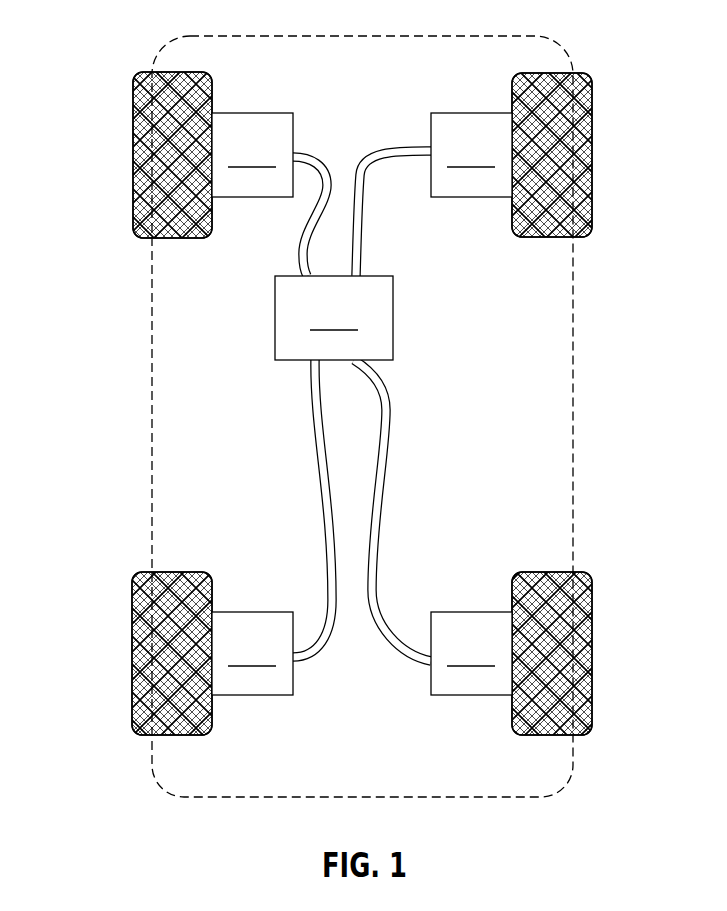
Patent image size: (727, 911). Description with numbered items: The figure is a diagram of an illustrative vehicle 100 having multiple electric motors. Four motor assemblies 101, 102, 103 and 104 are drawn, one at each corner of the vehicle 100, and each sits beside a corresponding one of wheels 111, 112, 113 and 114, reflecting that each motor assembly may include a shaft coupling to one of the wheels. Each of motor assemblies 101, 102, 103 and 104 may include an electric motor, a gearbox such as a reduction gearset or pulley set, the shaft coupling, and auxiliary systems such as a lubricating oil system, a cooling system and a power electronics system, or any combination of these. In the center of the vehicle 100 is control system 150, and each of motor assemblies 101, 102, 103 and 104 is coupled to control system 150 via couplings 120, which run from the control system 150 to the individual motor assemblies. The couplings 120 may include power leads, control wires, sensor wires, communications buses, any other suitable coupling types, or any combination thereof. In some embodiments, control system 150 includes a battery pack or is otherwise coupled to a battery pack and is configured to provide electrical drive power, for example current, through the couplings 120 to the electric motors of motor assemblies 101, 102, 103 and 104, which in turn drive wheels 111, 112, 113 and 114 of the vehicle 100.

The vehicle 100 is at (227, 36).
The motor assembly 101 is at (252, 155).
The motor assembly 102 is at (471, 155).
The motor assembly 103 is at (252, 653).
The motor assembly 104 is at (471, 653).
The wheel 111 is at (132, 155).
The wheel 112 is at (592, 155).
The wheel 113 is at (132, 655).
The wheel 114 is at (592, 670).
The couplings 120 is at (405, 418).
The control system 150 is at (334, 318).